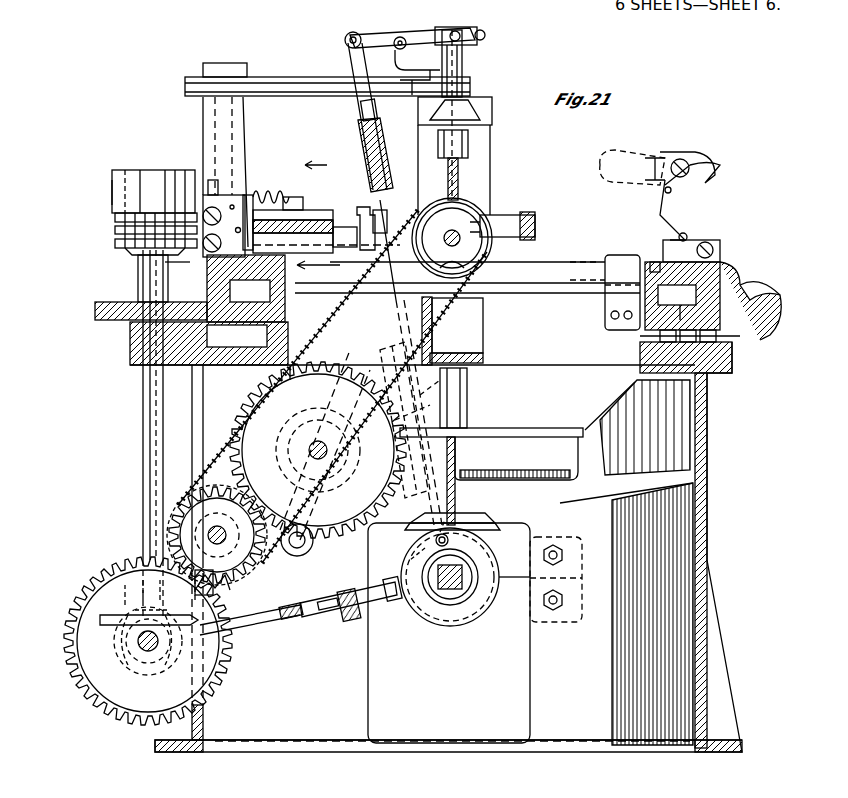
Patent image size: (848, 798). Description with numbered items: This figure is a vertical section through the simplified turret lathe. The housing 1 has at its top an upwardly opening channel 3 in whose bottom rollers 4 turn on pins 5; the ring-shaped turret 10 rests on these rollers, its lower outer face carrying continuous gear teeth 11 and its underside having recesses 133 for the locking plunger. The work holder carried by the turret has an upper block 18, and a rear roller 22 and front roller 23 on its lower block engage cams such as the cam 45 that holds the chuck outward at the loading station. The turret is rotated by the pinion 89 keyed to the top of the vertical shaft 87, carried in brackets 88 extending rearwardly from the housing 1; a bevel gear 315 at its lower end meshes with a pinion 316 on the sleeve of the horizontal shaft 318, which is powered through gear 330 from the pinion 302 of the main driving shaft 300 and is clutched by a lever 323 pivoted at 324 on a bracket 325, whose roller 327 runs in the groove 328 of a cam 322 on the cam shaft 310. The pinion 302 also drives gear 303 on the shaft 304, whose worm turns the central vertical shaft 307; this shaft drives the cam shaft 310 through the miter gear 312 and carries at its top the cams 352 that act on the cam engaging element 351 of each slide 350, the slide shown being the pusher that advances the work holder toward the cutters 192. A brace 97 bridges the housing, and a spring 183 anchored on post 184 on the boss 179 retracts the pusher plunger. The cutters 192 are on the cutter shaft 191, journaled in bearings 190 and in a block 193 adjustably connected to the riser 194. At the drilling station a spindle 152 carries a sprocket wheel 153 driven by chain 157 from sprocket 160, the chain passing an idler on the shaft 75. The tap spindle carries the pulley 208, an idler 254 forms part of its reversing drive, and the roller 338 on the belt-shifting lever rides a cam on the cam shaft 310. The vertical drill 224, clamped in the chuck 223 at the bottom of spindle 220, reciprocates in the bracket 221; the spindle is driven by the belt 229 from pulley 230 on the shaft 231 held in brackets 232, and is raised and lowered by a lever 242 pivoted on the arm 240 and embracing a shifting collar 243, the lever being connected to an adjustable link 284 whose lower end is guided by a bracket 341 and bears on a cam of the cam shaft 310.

The housing 1 is at (707, 440).
The channel 3 is at (700, 373).
The rollers 4 is at (660, 360).
The pins 5 is at (740, 338).
The turret 10 is at (722, 262).
The gear teeth 11 is at (185, 276).
The upper block 18 is at (688, 160).
The roller 22 is at (526, 211).
The roller 23 is at (660, 215).
The cam 45 is at (610, 255).
The shaft 75 is at (305, 533).
The vertical shaft 87 is at (143, 410).
The brackets 88 is at (130, 360).
The pinion 89 is at (95, 310).
The brace 97 is at (483, 322).
The recesses 133 is at (675, 302).
The spindle 152 is at (430, 262).
The sprocket wheel 153 is at (480, 262).
The chain 157 is at (240, 435).
The sprocket wheel 160 is at (198, 470).
The cylindrical boss 179 is at (285, 240).
The spring 183 is at (253, 190).
The post 184 is at (292, 197).
The bearings 190 is at (138, 275).
The cutter shaft 191 is at (155, 150).
The cutters 192 is at (115, 244).
The block 193 is at (128, 185).
The riser 194 is at (112, 188).
The pulley 208 is at (390, 355).
The spindle 220 is at (462, 55).
The bracket 221 is at (495, 110).
The chuck 223 is at (468, 140).
The drill 224 is at (458, 163).
The belt 229 is at (315, 90).
The pulley 230 is at (258, 77).
The shaft 231 is at (236, 63).
The brackets 232 is at (245, 125).
The arm 240 is at (410, 78).
The lever 242 is at (380, 45).
The shifting collar 243 is at (478, 32).
The idler 254 is at (338, 606).
The adjustable link 284 is at (357, 68).
The main driving shaft 300 is at (205, 533).
The pinion 302 is at (215, 585).
The gear 303 is at (283, 462).
The shaft 304 is at (325, 440).
The central vertical shaft 307 is at (460, 372).
The cam shaft 310 is at (440, 605).
The miter gear 312 is at (500, 528).
The bevel gear 315 is at (75, 628).
The pinion 316 is at (137, 650).
The shaft 318 is at (140, 662).
The cam 322 is at (488, 605).
The lever 323 is at (255, 620).
The pivot 324 is at (290, 620).
The bracket 325 is at (345, 620).
The roller 327 is at (388, 583).
The groove 328 is at (462, 610).
The gear 330 is at (112, 712).
The roller 338 is at (415, 545).
The bracket 341 is at (470, 410).
The slides 350 is at (362, 207).
The cam engaging element 351 is at (390, 217).
The individual cam 352 is at (515, 215).